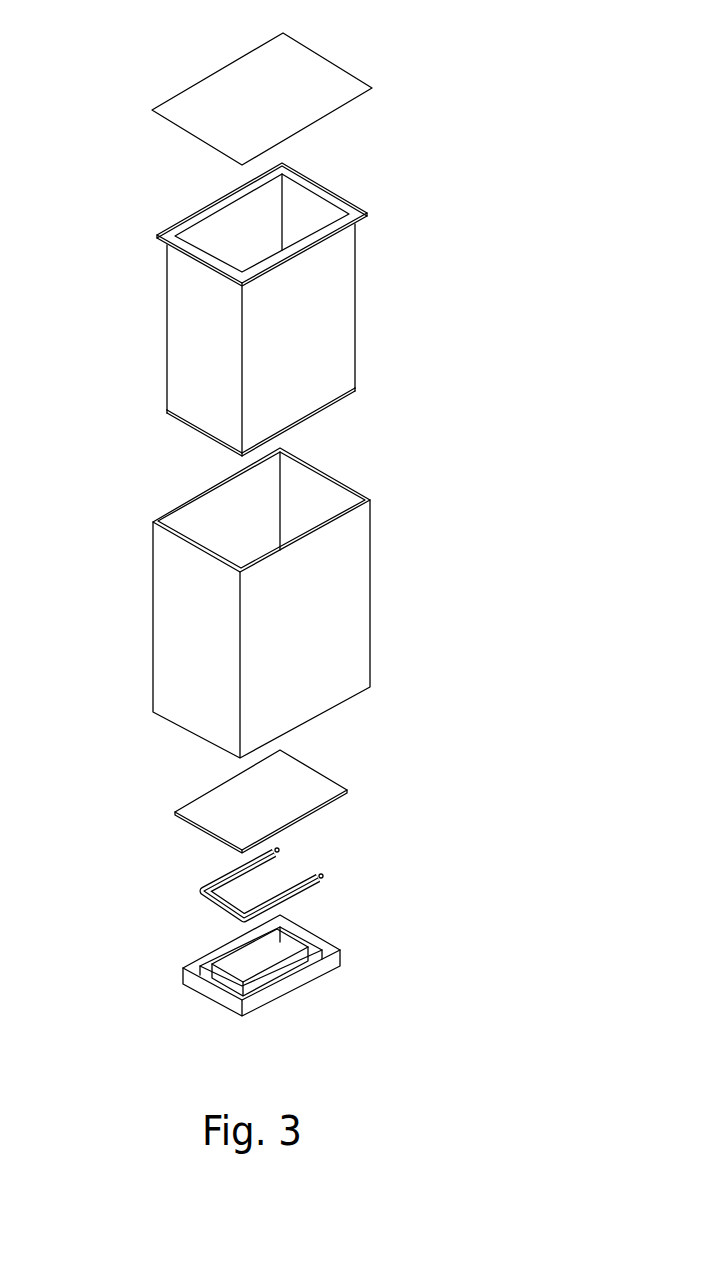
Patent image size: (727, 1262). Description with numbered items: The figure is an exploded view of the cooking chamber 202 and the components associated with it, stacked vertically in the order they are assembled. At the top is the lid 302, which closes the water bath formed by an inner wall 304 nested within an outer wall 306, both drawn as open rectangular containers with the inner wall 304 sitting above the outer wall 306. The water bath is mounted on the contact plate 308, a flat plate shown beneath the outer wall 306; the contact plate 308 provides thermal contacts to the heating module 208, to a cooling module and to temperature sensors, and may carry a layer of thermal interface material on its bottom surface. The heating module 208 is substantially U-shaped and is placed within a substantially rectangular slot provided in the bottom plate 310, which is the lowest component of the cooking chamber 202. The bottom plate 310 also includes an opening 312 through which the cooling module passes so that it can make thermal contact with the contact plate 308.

The cooking chamber 202 is at (530, 930).
The heating module 208 is at (197, 889).
The lid 302 is at (210, 98).
The inner wall 304 is at (182, 318).
The outer wall 306 is at (158, 623).
The contact plate 308 is at (222, 796).
The bottom plate 310 is at (183, 977).
The opening 312 is at (272, 958).